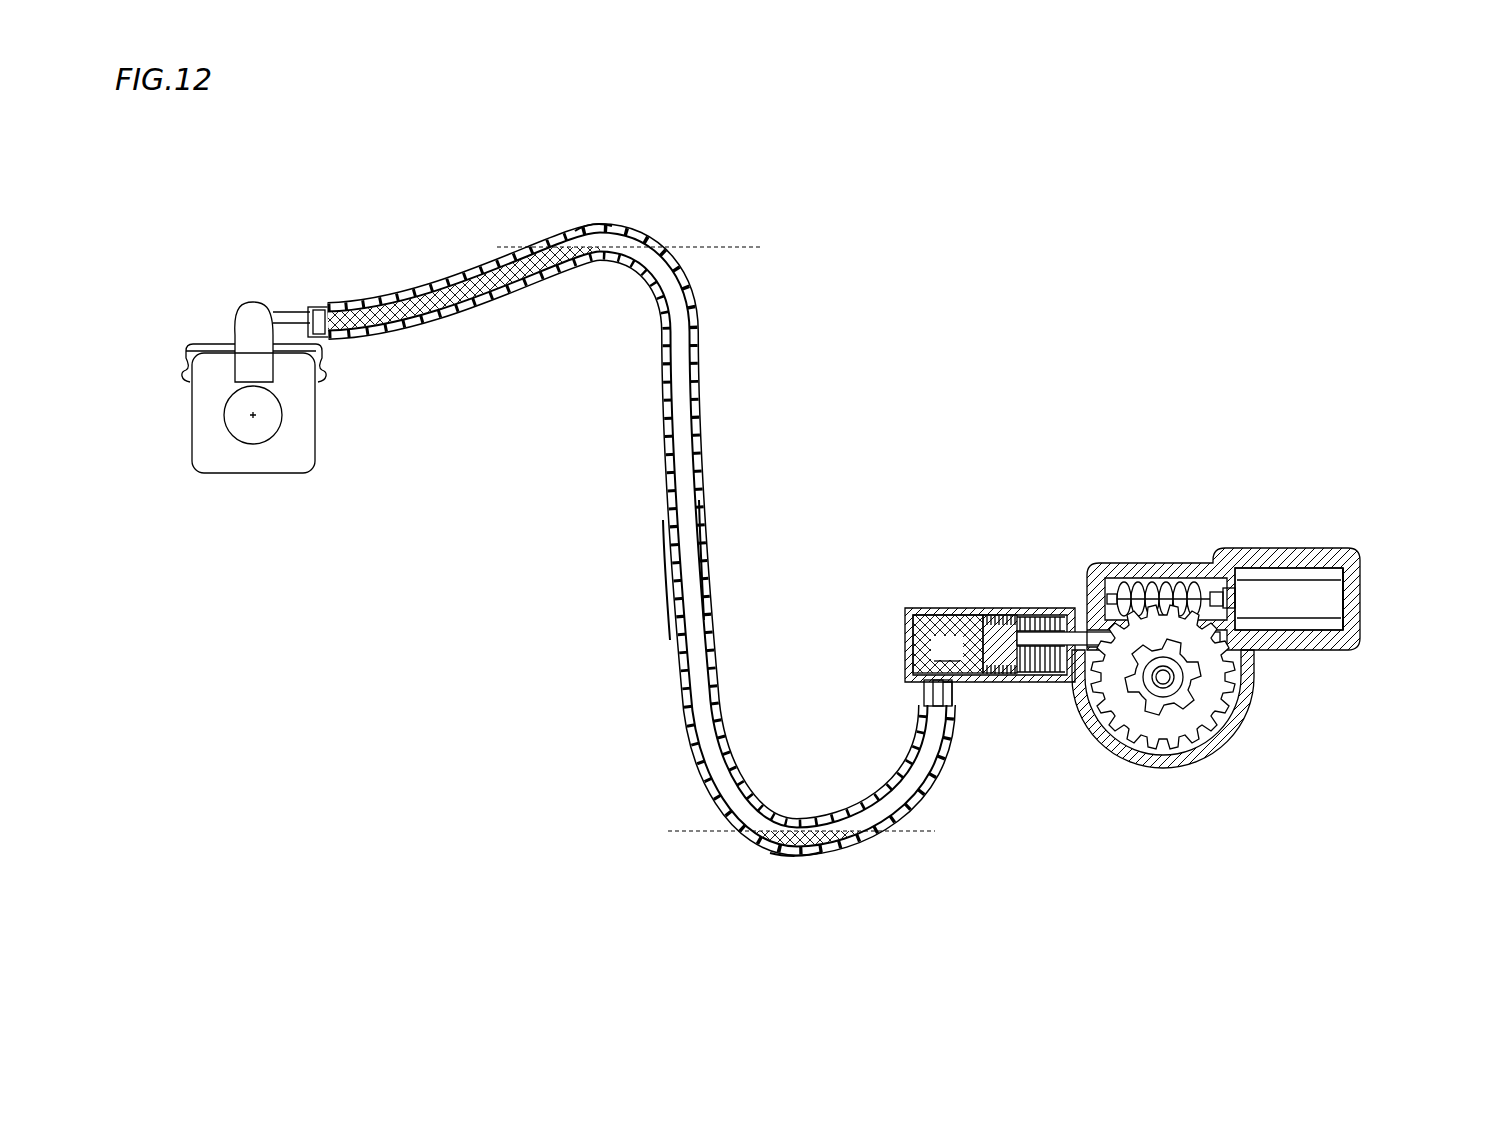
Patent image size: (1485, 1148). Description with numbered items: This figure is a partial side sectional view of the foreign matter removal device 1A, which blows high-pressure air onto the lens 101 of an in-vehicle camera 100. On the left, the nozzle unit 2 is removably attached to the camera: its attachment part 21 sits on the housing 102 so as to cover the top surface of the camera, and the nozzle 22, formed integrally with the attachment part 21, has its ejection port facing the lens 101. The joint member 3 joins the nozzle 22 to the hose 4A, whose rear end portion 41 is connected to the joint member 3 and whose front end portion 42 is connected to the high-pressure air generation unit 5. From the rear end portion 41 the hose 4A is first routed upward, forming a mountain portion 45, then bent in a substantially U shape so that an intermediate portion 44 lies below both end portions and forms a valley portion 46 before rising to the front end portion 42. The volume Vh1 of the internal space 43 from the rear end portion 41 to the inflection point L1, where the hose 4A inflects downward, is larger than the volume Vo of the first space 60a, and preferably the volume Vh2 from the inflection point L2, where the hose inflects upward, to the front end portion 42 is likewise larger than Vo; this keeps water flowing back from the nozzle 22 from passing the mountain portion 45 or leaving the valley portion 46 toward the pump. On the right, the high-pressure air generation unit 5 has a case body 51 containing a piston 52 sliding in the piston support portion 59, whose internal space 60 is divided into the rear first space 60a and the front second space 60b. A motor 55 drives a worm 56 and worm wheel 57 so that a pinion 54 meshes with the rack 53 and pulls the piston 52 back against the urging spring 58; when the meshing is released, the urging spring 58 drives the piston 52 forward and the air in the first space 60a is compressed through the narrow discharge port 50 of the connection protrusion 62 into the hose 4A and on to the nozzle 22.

The foreign matter removal device 1A is at (830, 205).
The nozzle unit 2 is at (197, 305).
The attachment part 21 is at (204, 343).
The nozzle 22 is at (252, 312).
The joint member 3 is at (297, 317).
The rear end portion 41 is at (322, 315).
The hose 4A is at (708, 404).
The front end portion 42 is at (919, 690).
The internal space 43 is at (702, 563).
The intermediate portion 44 is at (667, 606).
The mountain portion 45 is at (600, 224).
The valley portion 46 is at (793, 856).
The volume of the internal space from the rear end portion to inflection point L1 Vh1 is at (455, 296).
The volume of the internal space from inflection point L2 to the front end portion Vh2 is at (858, 840).
The inflection point L1 is at (710, 246).
The inflection point L2 is at (686, 836).
The in-vehicle camera 100 is at (240, 477).
The lens 101 is at (268, 418).
The housing 102 is at (287, 462).
The discharge port 50 is at (952, 736).
The piston support portion 59 is at (906, 616).
The internal space 60 is at (1038, 488).
The first space 60a is at (945, 614).
The second space 60b is at (1005, 614).
The piston 52 is at (996, 618).
The urging spring 58 is at (1031, 618).
The connection protrusion 62 is at (952, 690).
The high-pressure air generation unit 5 is at (1212, 512).
The rack 53 is at (1060, 632).
The worm 56 is at (1142, 598).
The case body 51 is at (1290, 556).
The motor 55 is at (1342, 600).
The pinion 54 is at (1102, 742).
The worm wheel 57 is at (1228, 722).